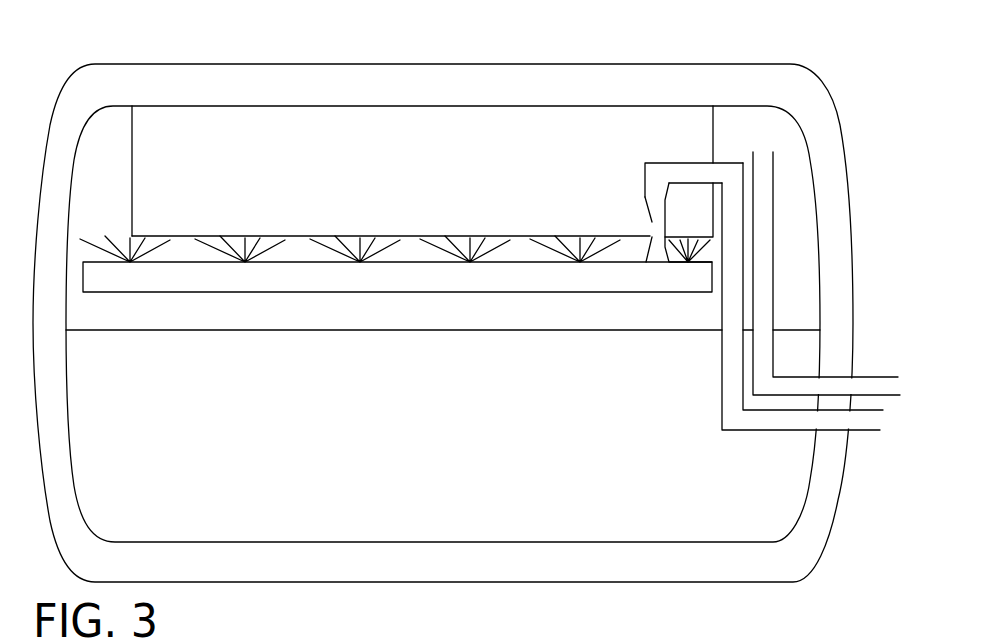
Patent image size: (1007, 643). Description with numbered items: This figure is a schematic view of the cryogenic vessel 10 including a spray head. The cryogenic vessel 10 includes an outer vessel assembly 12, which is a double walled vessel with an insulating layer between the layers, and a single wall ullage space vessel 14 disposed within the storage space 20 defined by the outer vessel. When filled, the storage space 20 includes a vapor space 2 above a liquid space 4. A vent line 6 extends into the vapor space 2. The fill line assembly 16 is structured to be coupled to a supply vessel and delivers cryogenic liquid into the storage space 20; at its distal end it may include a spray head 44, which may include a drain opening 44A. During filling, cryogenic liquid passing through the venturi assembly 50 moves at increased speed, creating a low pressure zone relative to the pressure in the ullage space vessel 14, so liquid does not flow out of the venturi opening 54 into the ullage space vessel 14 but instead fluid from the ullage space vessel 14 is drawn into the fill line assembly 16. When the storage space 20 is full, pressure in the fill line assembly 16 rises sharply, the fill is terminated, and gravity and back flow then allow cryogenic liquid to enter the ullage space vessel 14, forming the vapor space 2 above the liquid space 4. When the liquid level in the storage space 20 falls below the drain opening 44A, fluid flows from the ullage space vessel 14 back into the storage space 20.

The cryogenic vessel 10 is at (415, 50).
The outer vessel assembly 12 is at (552, 65).
The vapor space 2 is at (115, 127).
The ullage space vessel 14 is at (207, 125).
The storage space 20 is at (397, 506).
The liquid space 4 is at (478, 518).
The spray head 44 is at (272, 283).
The drain opening 44A is at (118, 303).
The venturi assembly 50 is at (632, 195).
The venturi opening 54 is at (650, 221).
The fill line assembly 16 is at (725, 398).
The vent line 6 is at (760, 358).